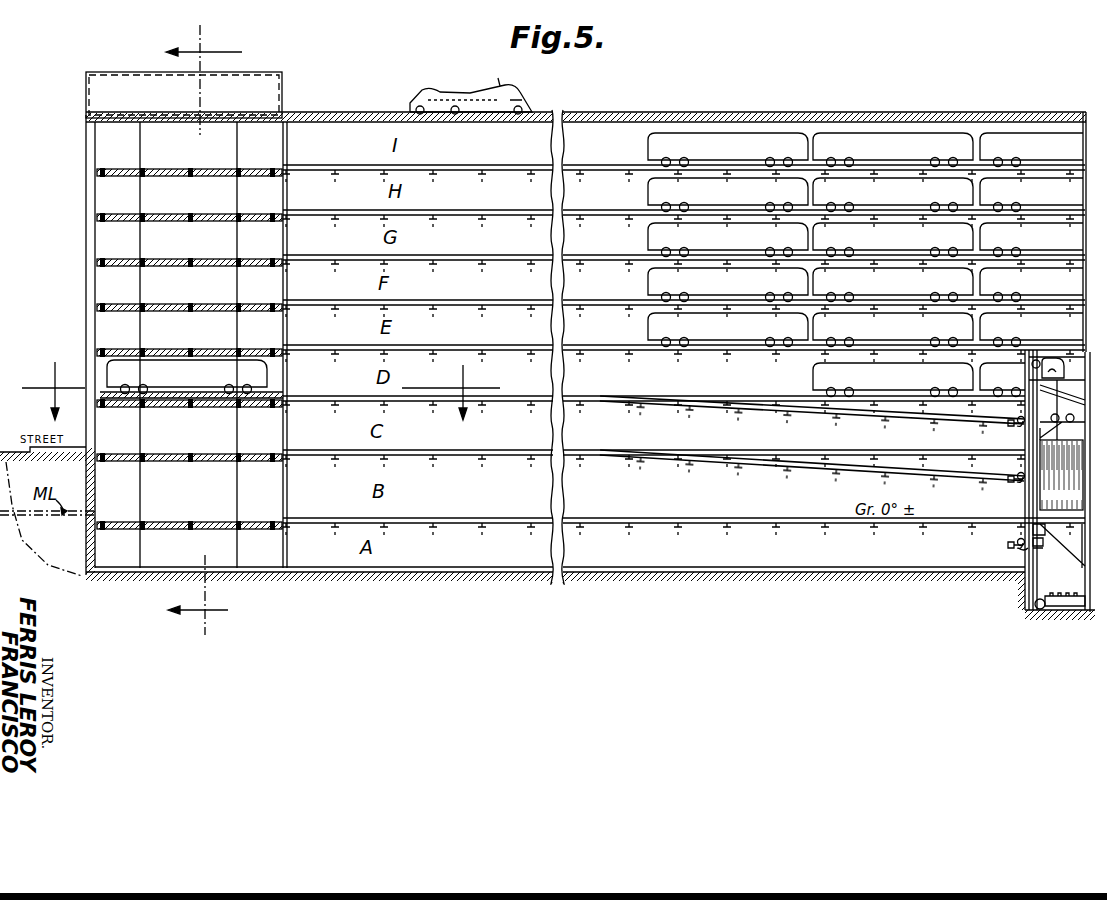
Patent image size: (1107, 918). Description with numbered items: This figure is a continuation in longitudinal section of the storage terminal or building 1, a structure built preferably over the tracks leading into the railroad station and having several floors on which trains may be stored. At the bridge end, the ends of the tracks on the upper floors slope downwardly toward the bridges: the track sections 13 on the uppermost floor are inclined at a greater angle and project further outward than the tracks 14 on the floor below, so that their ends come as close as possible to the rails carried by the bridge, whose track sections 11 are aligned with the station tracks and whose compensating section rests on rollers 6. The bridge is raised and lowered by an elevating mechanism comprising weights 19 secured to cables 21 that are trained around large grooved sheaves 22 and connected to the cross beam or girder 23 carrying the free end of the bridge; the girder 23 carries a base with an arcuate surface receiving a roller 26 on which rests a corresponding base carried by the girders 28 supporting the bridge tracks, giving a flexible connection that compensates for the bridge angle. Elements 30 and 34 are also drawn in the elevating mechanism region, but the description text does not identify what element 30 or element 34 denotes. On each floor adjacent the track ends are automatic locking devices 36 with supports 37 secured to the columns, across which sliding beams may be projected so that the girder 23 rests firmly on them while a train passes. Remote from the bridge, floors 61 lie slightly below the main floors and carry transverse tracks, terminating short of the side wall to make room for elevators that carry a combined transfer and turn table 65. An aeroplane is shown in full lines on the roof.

The storage terminal or building 1 is at (836, 126).
The rollers 6 is at (204, 331).
The track sections 11 is at (260, 391).
The track sections 13 is at (937, 410).
The tracks 14 is at (946, 468).
The weights 19 is at (1061, 477).
The cables 21 is at (1062, 410).
The grooved sheaves 22 is at (1061, 368).
The cross beam or girder 23 is at (1046, 547).
The roller 26 is at (1058, 538).
The girders 28 is at (1047, 530).
The bottom pulley 30 is at (1036, 606).
The top pulley 34 is at (1037, 360).
The automatic locking devices 36 is at (1006, 441).
The supports 37 is at (1020, 550).
The floors 61 is at (218, 172).
The combined transfer and turn table 65 is at (275, 397).